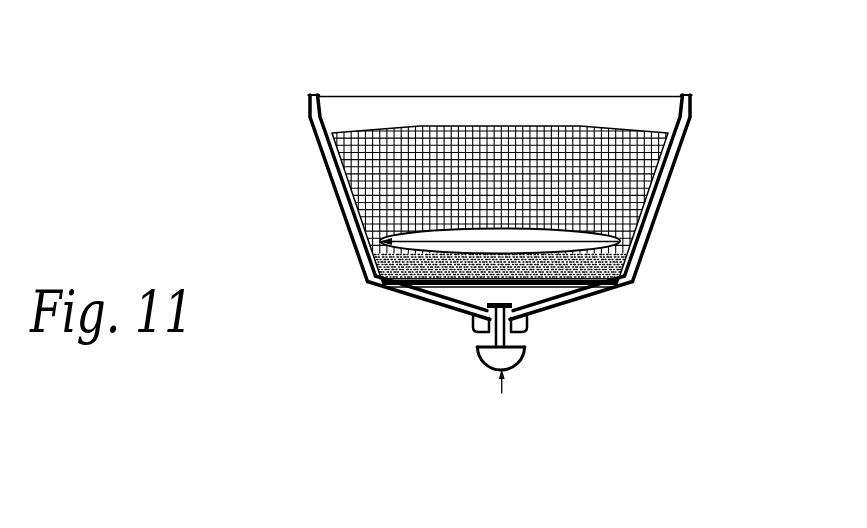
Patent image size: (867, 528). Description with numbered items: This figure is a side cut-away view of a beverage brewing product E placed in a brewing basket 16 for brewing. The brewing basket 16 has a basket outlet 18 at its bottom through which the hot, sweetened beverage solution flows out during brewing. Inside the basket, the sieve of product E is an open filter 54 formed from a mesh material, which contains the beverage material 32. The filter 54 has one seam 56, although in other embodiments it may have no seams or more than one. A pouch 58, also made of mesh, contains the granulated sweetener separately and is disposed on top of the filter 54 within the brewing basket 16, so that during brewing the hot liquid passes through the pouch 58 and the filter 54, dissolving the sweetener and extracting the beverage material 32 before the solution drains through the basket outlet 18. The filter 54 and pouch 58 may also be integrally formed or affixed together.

The beverage brewing product E is at (366, 117).
The brewing basket 16 is at (337, 199).
The basket outlet 18 is at (523, 339).
The beverage material 32 is at (618, 258).
The open filter 54 is at (498, 140).
The seam 56 is at (408, 295).
The pouch 58 is at (527, 232).